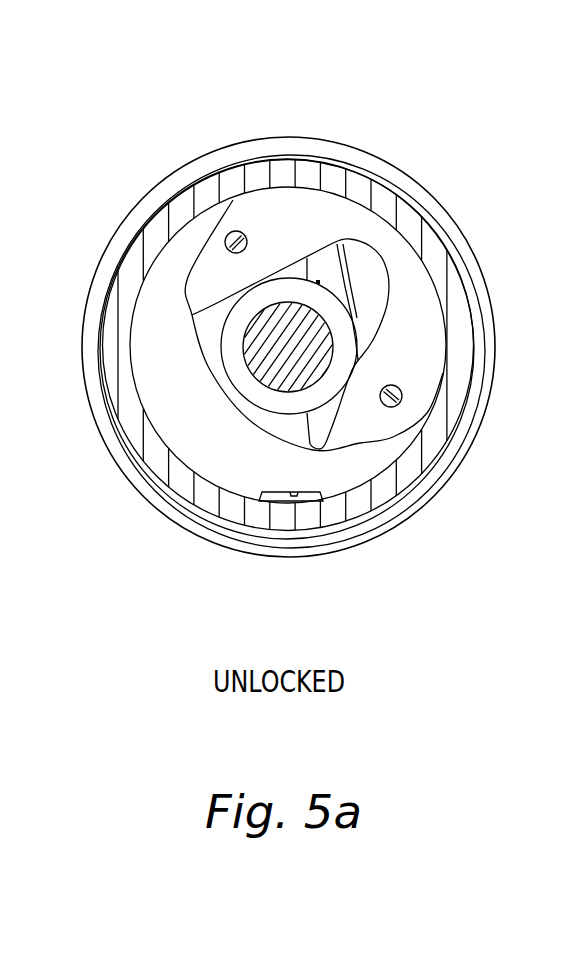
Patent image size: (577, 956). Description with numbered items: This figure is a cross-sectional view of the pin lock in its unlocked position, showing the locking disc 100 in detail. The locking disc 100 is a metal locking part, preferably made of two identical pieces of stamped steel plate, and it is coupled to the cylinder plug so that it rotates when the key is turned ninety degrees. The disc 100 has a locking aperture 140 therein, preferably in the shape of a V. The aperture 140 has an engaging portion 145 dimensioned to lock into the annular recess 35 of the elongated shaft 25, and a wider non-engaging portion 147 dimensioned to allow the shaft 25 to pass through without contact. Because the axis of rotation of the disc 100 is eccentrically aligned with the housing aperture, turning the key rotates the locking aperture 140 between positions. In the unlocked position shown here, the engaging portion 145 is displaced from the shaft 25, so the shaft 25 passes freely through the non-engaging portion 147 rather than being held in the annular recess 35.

The locking disc 100 is at (300, 213).
The non-engaging portion 147 is at (217, 303).
The engaging portion 145 is at (381, 262).
The locking aperture 140 is at (374, 292).
The annular recess 35 is at (335, 347).
The elongated shaft 25 is at (312, 448).